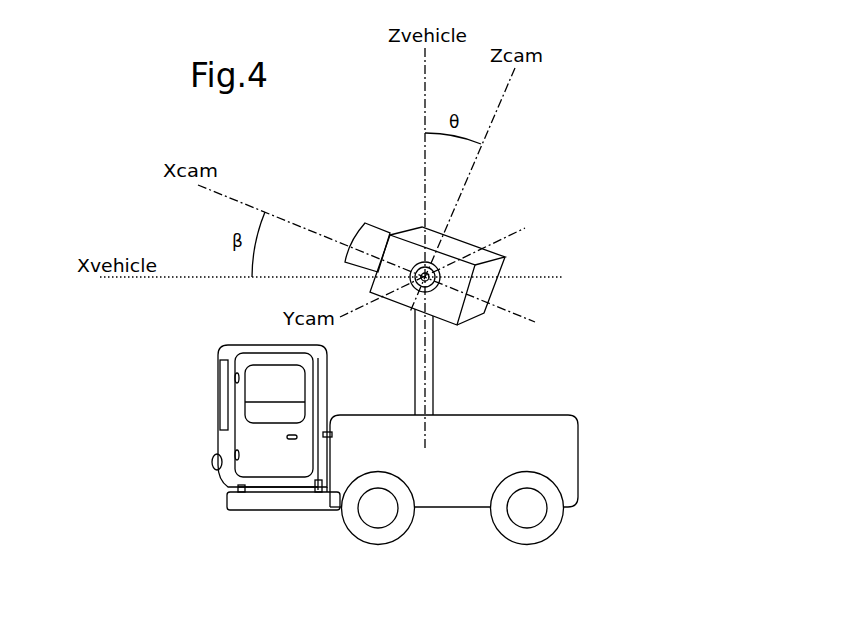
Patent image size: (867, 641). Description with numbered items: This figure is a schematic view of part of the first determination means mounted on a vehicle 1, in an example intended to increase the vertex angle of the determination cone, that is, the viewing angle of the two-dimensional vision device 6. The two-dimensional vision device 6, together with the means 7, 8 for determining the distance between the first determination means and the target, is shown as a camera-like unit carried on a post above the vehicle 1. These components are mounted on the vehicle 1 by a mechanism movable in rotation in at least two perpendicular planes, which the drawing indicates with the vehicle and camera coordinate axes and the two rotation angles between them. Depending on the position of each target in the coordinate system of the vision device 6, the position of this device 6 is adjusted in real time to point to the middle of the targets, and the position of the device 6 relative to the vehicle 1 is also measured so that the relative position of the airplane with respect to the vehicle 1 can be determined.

The vehicle 1 is at (612, 458).
The two-dimensional vision device 6 is at (466, 288).
The means for determining the distance 7 is at (466, 288).
The means for determining the distance 8 is at (472, 232).